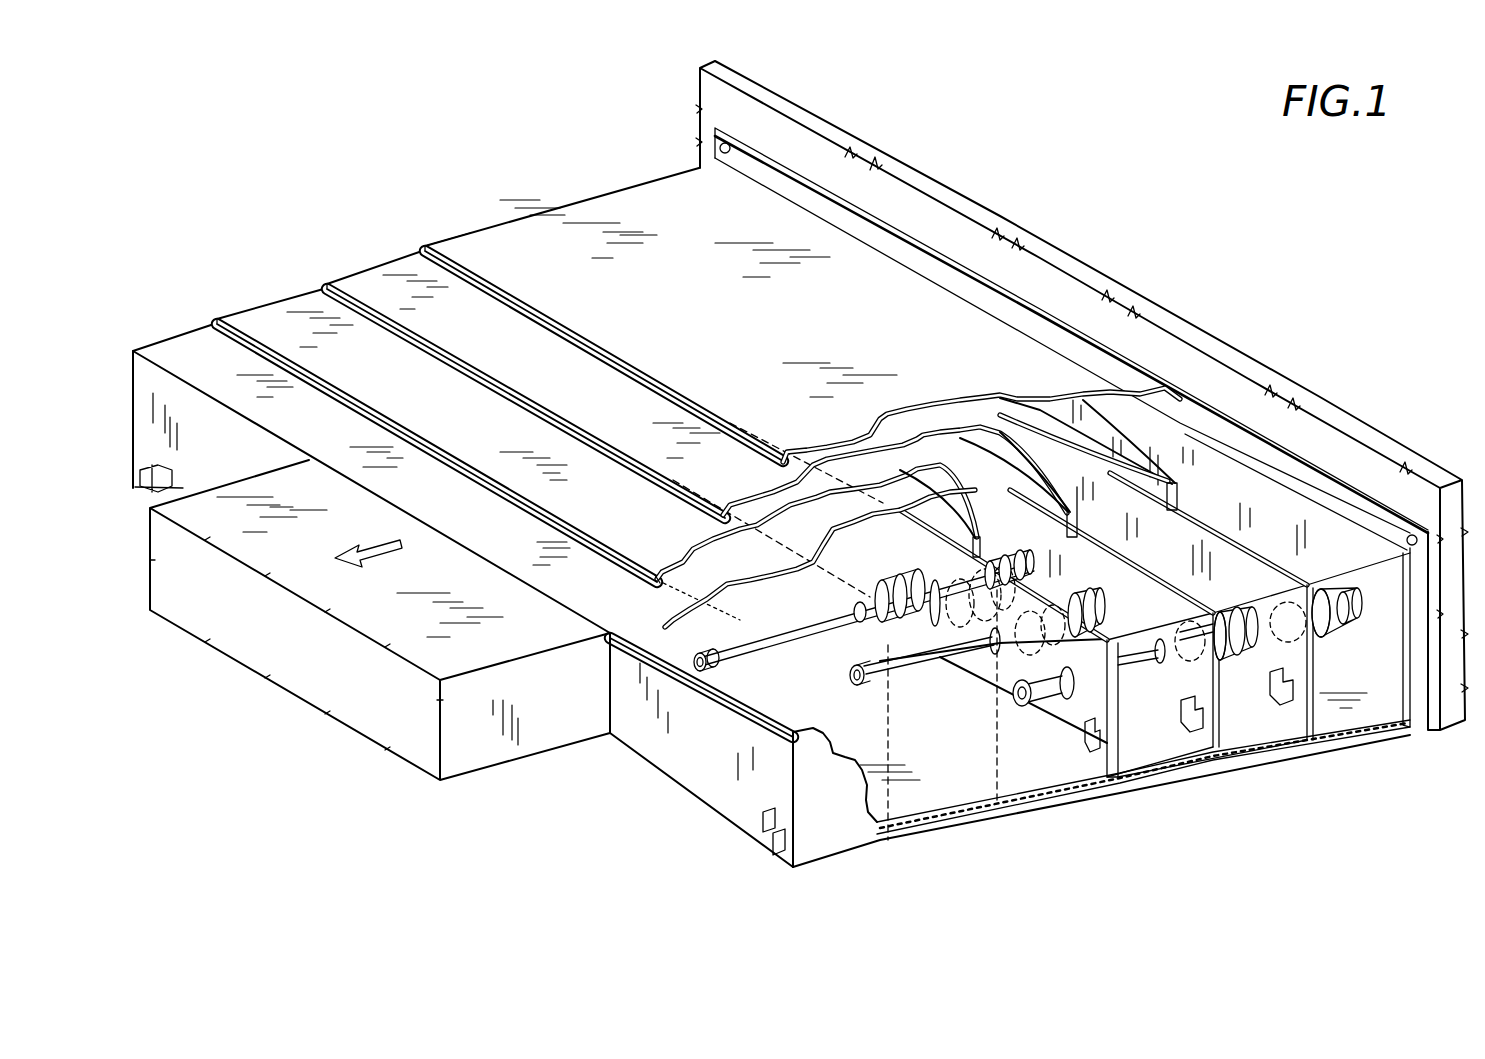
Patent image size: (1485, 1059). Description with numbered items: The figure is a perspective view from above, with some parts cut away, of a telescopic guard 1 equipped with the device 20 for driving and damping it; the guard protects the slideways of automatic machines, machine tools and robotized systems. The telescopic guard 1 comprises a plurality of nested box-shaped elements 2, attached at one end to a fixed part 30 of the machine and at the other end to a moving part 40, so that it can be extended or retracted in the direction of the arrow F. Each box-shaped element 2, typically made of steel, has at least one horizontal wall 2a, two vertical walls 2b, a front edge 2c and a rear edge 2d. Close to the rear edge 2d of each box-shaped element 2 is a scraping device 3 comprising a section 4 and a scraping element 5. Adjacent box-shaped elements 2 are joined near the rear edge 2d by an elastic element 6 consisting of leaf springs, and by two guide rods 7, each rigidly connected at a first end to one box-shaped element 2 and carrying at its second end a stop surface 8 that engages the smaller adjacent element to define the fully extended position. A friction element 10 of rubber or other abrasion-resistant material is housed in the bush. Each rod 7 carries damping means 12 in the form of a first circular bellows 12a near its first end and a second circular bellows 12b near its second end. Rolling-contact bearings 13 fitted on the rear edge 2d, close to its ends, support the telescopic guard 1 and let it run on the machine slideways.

The telescopic guard 1 is at (462, 168).
The box-shaped element 2 is at (533, 210).
The horizontal wall 2a is at (638, 225).
The vertical wall 2b is at (827, 825).
The front edge 2c is at (420, 247).
The rear edge 2d is at (1097, 540).
The scraping device 3 is at (323, 303).
The section 4 is at (663, 587).
The scraping element 5 is at (357, 316).
The elastic element 6 is at (990, 450).
The guide rod 7 is at (887, 615).
The stop surface 8 is at (858, 690).
The friction element 10 is at (1258, 663).
The damping means 12 is at (885, 580).
The first circular bellows 12a is at (1320, 644).
The second circular bellows 12b is at (1227, 670).
The rolling-contact bearing 13 is at (148, 480).
The device for driving and damping a telescopic guard 20 is at (1117, 407).
The fixed part 30 is at (827, 130).
The moving part 40 is at (472, 763).